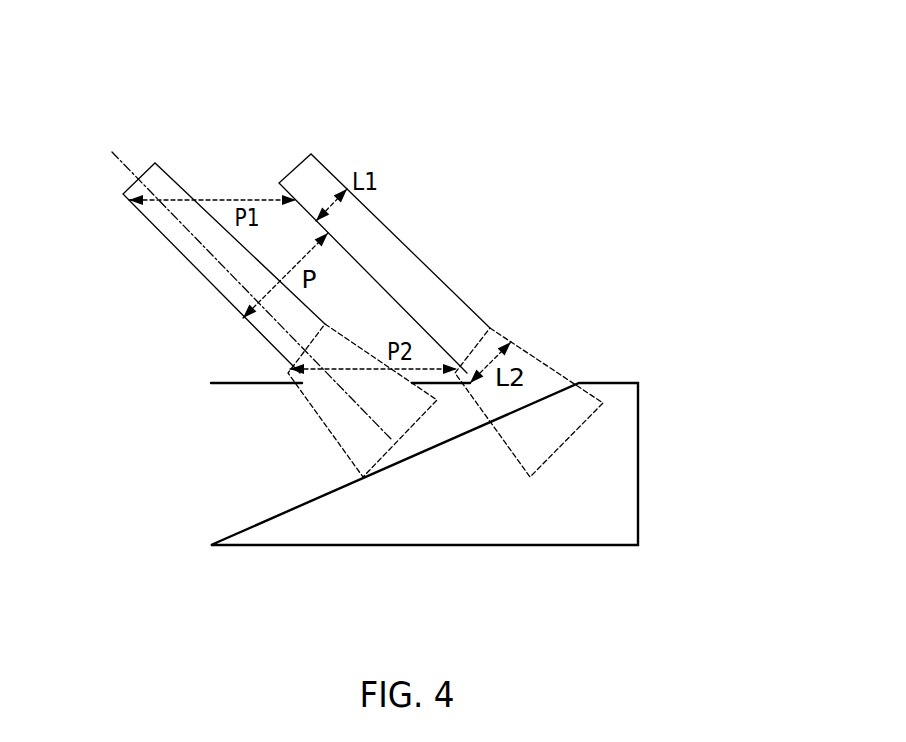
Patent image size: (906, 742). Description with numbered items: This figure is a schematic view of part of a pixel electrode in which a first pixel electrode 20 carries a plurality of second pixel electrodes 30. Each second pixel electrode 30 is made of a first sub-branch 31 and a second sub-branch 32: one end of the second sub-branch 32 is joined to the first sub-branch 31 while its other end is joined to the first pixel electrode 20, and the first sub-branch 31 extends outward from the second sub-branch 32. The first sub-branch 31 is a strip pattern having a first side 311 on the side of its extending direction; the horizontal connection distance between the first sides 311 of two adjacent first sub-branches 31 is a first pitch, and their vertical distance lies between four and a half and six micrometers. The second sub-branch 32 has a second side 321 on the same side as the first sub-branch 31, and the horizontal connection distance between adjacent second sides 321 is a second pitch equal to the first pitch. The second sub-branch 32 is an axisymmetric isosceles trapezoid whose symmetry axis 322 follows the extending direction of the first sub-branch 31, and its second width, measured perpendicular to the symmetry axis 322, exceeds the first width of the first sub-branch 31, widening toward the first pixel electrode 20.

The first pixel electrode 20 is at (593, 485).
The second pixel electrode 30 is at (472, 263).
The first sub-branch 31 is at (402, 275).
The second sub-branch 32 is at (553, 397).
The first side 311 is at (200, 292).
The second side 321 is at (293, 398).
The symmetry axis 322 is at (138, 138).